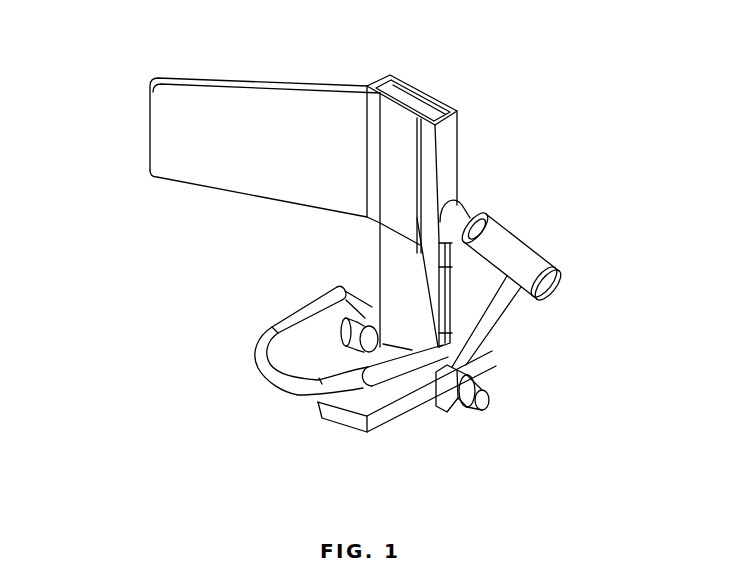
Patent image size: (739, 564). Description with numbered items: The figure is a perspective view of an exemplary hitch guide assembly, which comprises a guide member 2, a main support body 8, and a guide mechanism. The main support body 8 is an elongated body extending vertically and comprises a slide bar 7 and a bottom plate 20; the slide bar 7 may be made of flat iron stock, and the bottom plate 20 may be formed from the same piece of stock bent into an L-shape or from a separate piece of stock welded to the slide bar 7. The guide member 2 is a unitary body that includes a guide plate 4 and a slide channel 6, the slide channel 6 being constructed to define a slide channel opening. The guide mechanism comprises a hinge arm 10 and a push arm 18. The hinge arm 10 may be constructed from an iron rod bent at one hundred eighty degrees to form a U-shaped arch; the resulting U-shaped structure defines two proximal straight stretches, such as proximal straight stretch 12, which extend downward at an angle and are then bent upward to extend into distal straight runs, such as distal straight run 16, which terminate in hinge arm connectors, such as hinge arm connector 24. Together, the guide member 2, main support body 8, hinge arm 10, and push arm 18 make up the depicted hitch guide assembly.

The guide member 2 is at (333, 93).
The guide plate 4 is at (170, 140).
The slide channel 6 is at (443, 140).
The slide bar 7 is at (400, 262).
The main support body 8 is at (413, 402).
The hinge arm 10 is at (297, 393).
The proximal straight stretch 12 is at (302, 313).
The distal straight run 16 is at (487, 335).
The push arm 18 is at (497, 235).
The bottom plate 20 is at (380, 423).
The hinge arm connector 24 is at (548, 287).